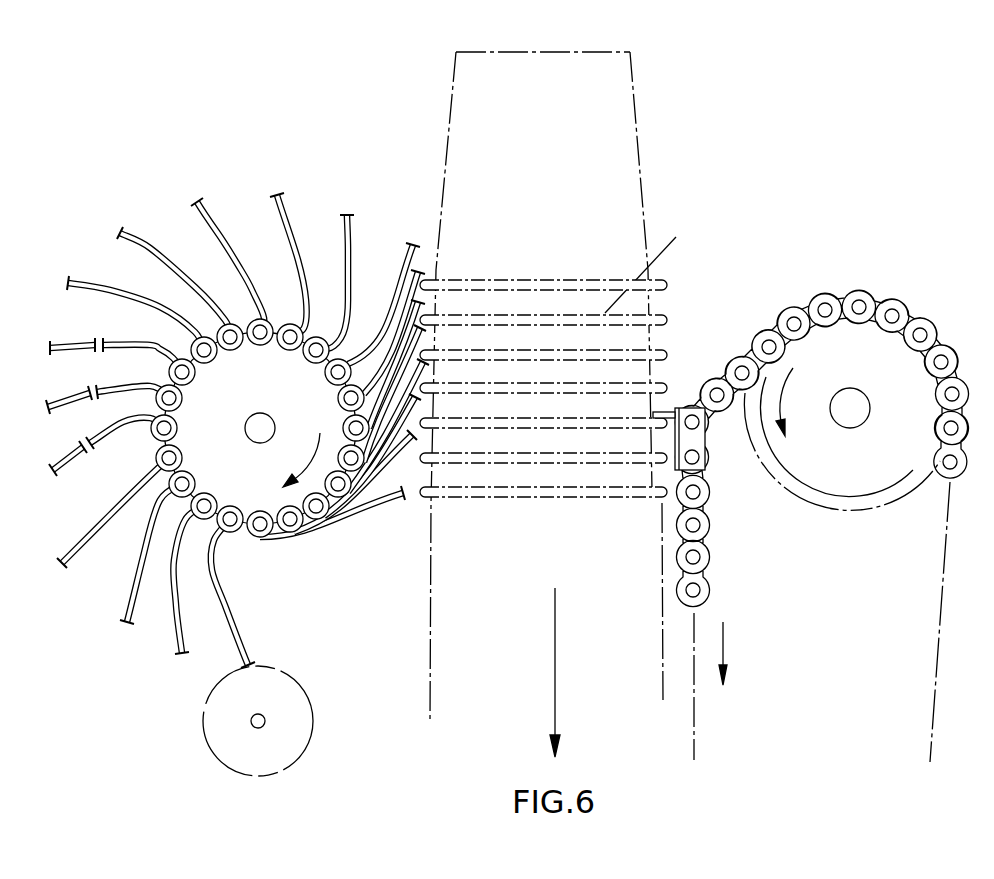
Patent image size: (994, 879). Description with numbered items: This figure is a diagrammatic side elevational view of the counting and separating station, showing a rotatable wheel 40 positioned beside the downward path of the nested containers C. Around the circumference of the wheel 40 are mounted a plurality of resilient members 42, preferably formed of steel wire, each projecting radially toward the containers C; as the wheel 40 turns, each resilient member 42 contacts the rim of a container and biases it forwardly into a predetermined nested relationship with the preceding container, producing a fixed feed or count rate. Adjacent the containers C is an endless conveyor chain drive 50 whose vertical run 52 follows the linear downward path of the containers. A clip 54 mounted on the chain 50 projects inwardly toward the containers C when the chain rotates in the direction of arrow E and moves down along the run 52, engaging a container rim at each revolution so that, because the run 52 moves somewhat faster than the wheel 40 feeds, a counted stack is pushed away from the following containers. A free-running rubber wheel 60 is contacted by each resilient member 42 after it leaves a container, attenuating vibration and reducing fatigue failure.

The rotatable wheel 40 is at (295, 346).
The resilient member 42 is at (233, 610).
The endless conveyor chain drive 50 is at (844, 297).
The vertical run 52 is at (711, 561).
The clip 54 is at (684, 408).
The free-running rubber wheel 60 is at (312, 705).
The container C is at (559, 386).
The arrow indicating direction of conveyor rotation E is at (555, 684).